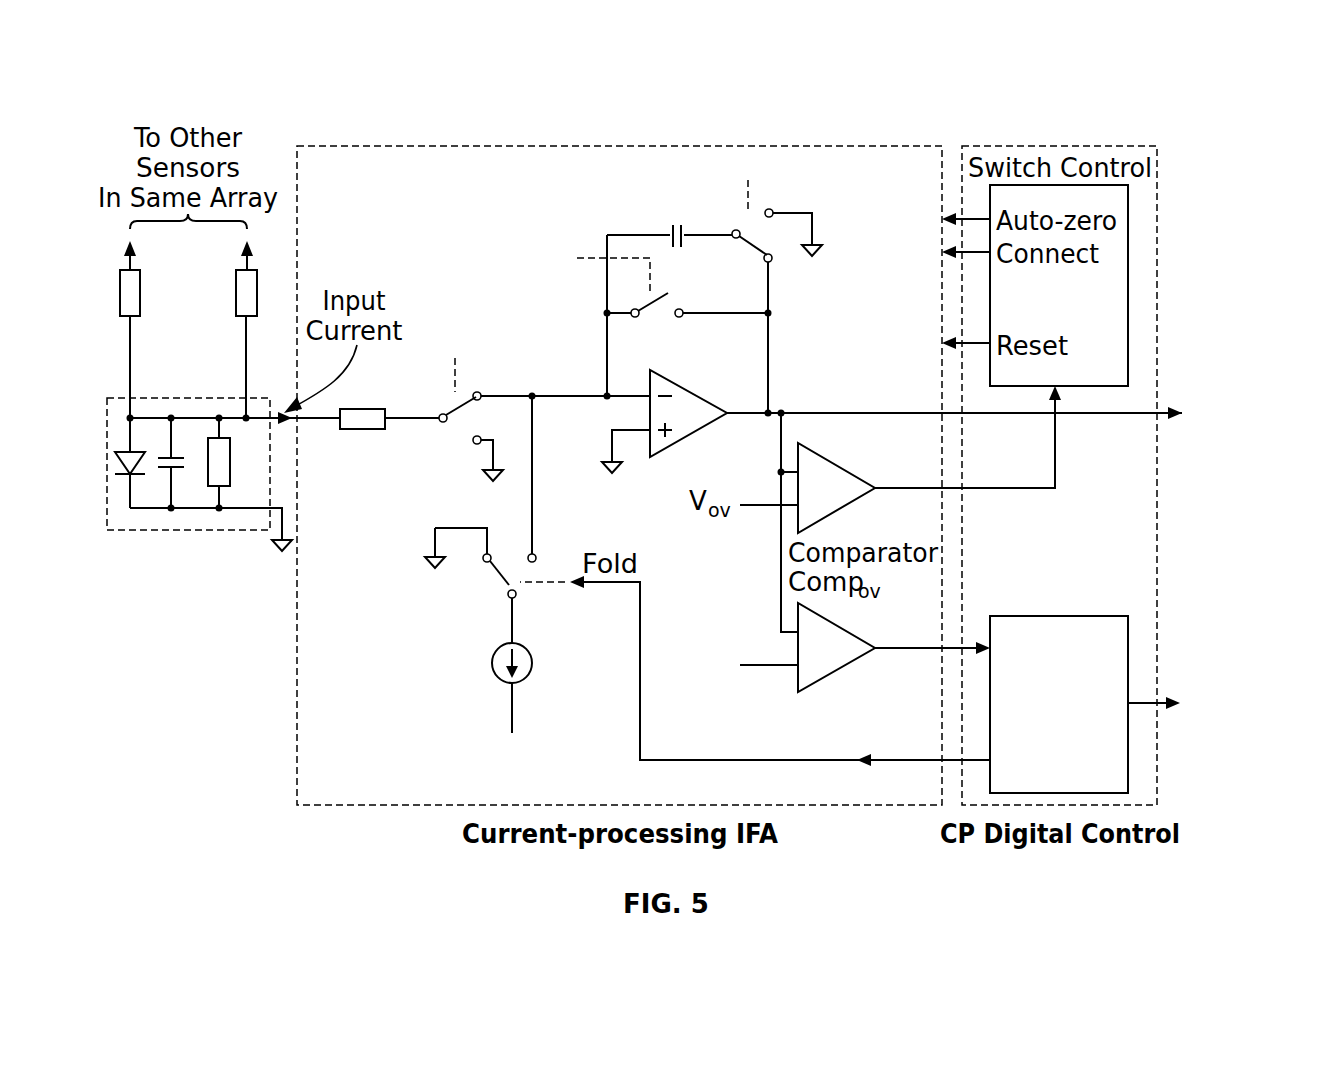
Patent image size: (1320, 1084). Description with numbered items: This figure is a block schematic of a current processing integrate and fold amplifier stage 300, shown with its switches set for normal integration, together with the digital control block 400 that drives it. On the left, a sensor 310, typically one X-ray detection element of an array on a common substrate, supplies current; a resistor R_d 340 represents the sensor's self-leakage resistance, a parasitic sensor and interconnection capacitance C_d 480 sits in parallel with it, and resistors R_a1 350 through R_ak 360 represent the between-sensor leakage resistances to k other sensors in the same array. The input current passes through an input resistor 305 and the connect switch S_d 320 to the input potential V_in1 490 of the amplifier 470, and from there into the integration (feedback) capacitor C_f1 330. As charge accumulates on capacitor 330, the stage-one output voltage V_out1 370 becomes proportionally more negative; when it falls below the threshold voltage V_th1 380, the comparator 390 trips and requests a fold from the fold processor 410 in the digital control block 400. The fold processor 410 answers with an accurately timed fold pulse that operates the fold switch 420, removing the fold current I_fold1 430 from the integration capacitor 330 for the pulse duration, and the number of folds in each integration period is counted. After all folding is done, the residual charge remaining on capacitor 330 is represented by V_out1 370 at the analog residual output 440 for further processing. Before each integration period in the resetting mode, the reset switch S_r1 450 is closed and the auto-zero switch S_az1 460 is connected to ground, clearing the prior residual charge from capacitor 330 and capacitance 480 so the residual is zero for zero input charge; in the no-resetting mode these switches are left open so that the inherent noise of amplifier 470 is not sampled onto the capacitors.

The current processing integrate and fold amplifier stage (CPIFA) 300 is at (362, 146).
The input resistor Rn1 305 is at (324, 416).
The sensor 310 is at (150, 532).
The switch S_d 320 is at (441, 424).
The integration (feedback) capacitor C_f1 330 is at (671, 226).
The resistor R_d 340 is at (230, 462).
The resistor R_a1 350 is at (142, 296).
The resistor R_ak 360 is at (258, 295).
The stage-1 output voltage V_out1 370 is at (853, 416).
The threshold voltage V_th1 380 is at (761, 662).
The comparator 390 is at (848, 663).
The digital control block 400 is at (1025, 146).
The fold processor 410 is at (1128, 677).
The fold switch 420 is at (497, 580).
The fold current I_fold1 430 is at (492, 664).
The analog residual output 440 is at (1128, 416).
The reset switch S_r1 450 is at (679, 319).
The auto-zero switch S_az1 460 is at (748, 242).
The amplifier 470 is at (705, 428).
The parasitic sensor and interconnection capacitance C_d 480 is at (178, 458).
The input potential V_in1 490 is at (590, 368).